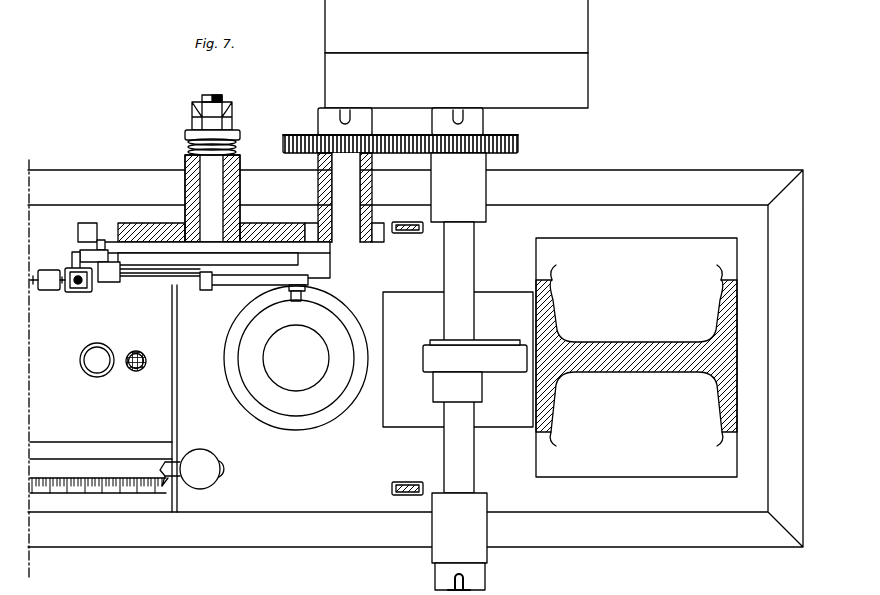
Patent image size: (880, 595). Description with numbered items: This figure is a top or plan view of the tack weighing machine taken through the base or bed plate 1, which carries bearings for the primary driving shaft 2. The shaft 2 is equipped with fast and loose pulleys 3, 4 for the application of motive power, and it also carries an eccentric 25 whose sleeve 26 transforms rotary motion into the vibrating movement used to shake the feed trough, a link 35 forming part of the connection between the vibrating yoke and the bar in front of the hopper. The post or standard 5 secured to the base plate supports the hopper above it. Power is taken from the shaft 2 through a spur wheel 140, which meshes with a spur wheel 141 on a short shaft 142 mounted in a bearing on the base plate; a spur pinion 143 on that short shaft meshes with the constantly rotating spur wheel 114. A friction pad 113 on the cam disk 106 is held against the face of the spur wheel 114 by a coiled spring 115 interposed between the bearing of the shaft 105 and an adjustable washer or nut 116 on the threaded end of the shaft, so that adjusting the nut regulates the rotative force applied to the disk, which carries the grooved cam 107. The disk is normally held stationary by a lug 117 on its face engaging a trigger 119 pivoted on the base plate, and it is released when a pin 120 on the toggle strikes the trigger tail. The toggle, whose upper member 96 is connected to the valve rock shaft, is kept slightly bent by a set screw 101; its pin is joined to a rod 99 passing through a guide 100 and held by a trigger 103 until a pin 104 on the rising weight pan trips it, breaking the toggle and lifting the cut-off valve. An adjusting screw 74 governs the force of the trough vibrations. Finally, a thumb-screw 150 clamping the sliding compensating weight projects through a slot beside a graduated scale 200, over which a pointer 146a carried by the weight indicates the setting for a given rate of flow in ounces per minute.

The base or bed plate 1 is at (172, 410).
The primary driving shaft 2 is at (474, 265).
The fast pulley 3 is at (456, 80).
The loose pulley 4 is at (456, 26).
The post or standard 5 is at (636, 357).
The eccentric 25 is at (490, 345).
The eccentric sleeve 26 is at (475, 373).
The link 35 is at (408, 235).
The adjusting screw 74 is at (97, 360).
The upper toggle member 96 is at (76, 292).
The rod 99 is at (174, 292).
The guide 100 is at (206, 290).
The set screw 101 is at (43, 273).
The trigger 103 is at (242, 285).
The pin 104 is at (306, 288).
The shaft 105 is at (212, 198).
The disk 106 is at (318, 248).
The grooved cam 107 is at (208, 258).
The friction pad 113 is at (258, 237).
The spur wheel 114 is at (140, 225).
The coiled spring 115 is at (236, 148).
The adjustable washer or nut 116 is at (234, 130).
The lug 117 is at (112, 270).
The trigger 119 is at (98, 257).
The pin 120 is at (75, 262).
The spur wheel 140 is at (520, 144).
The spur wheel 141 is at (306, 127).
The short shaft 142 is at (345, 197).
The spur pinion 143 is at (378, 243).
The pointer 146a is at (162, 468).
The thumb-screw 150 is at (202, 469).
The scale 200 is at (80, 488).